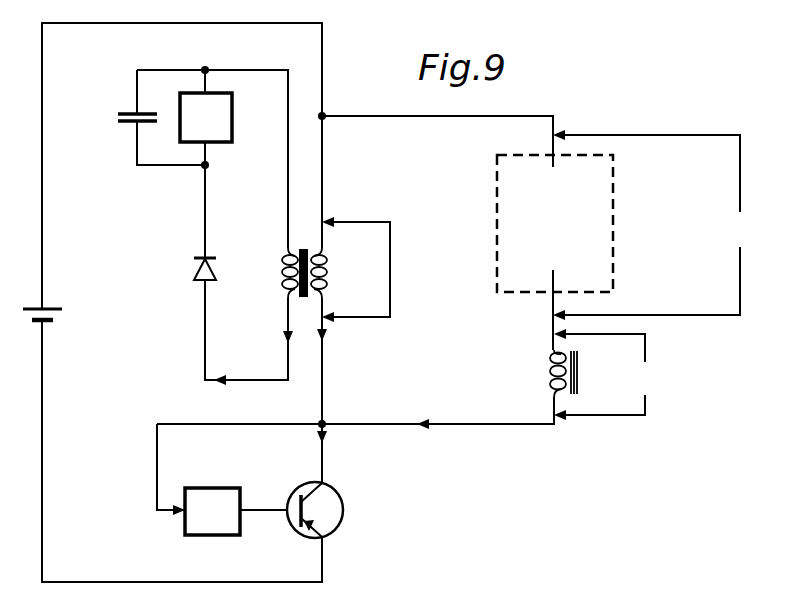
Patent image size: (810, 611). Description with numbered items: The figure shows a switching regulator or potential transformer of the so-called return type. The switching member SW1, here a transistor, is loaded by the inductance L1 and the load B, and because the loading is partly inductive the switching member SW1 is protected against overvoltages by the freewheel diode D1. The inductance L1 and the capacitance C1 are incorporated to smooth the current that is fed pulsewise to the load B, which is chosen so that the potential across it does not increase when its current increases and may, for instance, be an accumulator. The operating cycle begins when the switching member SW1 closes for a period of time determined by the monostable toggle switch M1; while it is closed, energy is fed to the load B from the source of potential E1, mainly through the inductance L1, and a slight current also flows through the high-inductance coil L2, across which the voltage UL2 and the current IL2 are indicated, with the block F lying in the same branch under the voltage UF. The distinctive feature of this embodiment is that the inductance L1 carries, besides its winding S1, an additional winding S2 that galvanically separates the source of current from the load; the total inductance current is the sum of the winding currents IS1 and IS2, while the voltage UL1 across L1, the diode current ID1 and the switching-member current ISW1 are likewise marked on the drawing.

The source of potential E1 is at (51, 308).
The capacitance C1 is at (152, 117).
The load B is at (206, 117).
The freewheel diode D1 is at (190, 260).
The inductance L1 is at (303, 256).
The winding S1 is at (336, 273).
The additional winding S2 is at (272, 273).
The monostable toggle switch M1 is at (212, 511).
The switching member SW1 is at (315, 510).
The field coil / load F is at (555, 223).
The inductance coil L2 is at (547, 373).
The voltage across L1 UL1 is at (364, 269).
The voltage across F UF is at (653, 225).
The voltage across L2 UL2 is at (612, 374).
The current I_S1 IS1 is at (344, 350).
The current I_S2 IS2 is at (268, 321).
The current through D1 ID1 is at (230, 361).
The current through SW1 ISW1 is at (355, 453).
The current through L2 IL2 is at (422, 400).